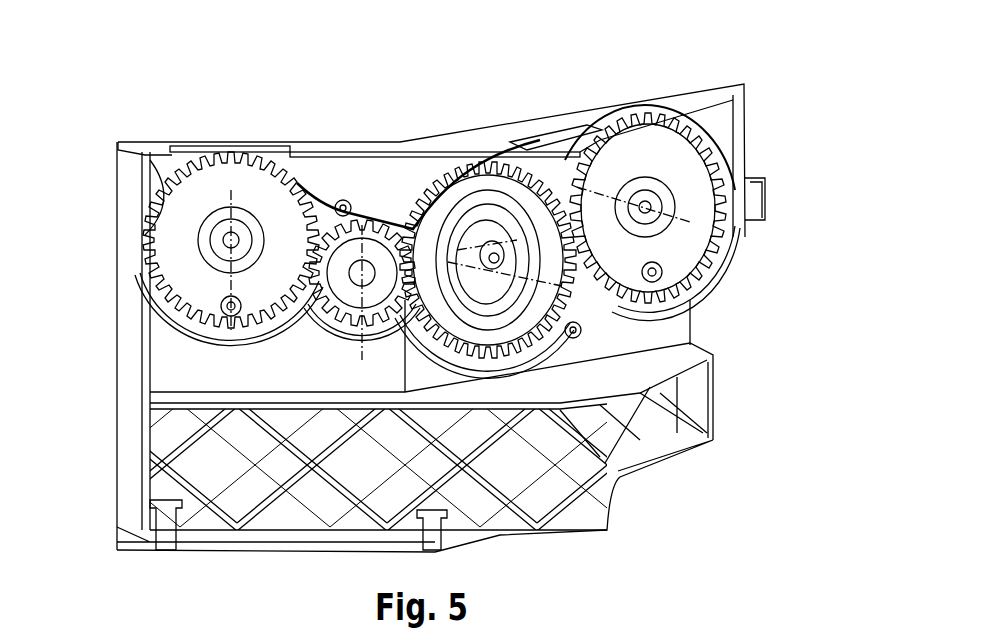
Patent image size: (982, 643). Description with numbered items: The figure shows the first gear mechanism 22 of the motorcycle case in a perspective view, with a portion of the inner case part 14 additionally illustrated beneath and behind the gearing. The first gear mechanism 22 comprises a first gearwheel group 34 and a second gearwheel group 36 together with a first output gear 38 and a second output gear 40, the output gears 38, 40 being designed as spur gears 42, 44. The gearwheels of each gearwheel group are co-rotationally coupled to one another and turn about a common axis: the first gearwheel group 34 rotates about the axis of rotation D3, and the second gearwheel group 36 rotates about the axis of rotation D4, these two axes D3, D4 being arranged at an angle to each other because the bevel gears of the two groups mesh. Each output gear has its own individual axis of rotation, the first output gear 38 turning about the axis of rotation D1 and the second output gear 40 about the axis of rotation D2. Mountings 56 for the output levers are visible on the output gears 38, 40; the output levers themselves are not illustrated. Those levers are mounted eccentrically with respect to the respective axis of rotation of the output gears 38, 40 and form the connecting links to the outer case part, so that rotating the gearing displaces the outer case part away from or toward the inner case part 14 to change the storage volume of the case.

The first gear mechanism 22 is at (100, 125).
The inner case part 14 is at (210, 447).
The first gearwheel group 34 is at (510, 210).
The second gearwheel group 36 is at (340, 273).
The first output gear 38 is at (721, 208).
The second output gear 40 is at (231, 187).
The spur gear 42 is at (682, 167).
The spur gear 44 is at (200, 197).
The mounting of the output lever 56 is at (220, 306).
The axis of rotation D1 is at (682, 220).
The axis of rotation D2 is at (227, 240).
The axis of rotation D3 is at (473, 248).
The axis of rotation D4 is at (370, 273).